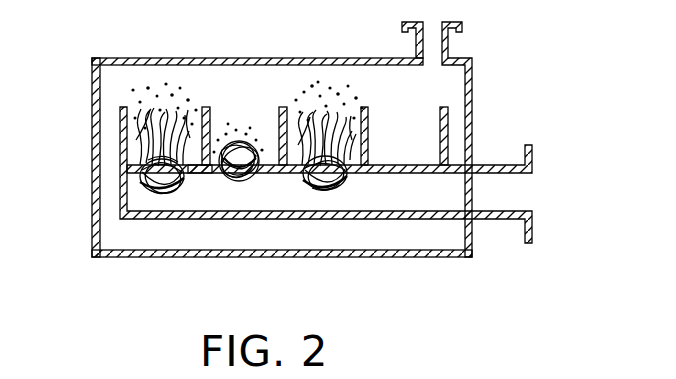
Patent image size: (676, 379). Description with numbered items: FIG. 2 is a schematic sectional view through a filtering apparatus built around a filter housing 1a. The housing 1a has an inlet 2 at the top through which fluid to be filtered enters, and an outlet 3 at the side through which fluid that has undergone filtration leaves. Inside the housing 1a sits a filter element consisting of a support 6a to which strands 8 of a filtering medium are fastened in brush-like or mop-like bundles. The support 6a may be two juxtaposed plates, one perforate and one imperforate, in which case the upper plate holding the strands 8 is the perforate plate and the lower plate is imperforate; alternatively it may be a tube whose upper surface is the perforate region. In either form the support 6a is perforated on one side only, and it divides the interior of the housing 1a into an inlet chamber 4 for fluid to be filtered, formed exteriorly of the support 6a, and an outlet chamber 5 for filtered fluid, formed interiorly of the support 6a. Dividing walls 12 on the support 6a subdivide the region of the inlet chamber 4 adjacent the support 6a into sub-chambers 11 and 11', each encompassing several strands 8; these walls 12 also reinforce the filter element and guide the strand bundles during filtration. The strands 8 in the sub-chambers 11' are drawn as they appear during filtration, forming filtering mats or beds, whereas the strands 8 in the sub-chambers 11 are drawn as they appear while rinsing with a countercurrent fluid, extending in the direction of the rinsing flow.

The filter housing 1a is at (92, 187).
The inlet 2 is at (430, 45).
The outlet 3 is at (517, 192).
The inlet chamber 4 is at (257, 97).
The outlet chamber 5 is at (318, 202).
The support 6a is at (500, 160).
The strands 8 is at (329, 104).
The sub-chambers 11 is at (164, 112).
The sub-chambers 11' is at (235, 105).
The dividing walls 12 is at (197, 175).